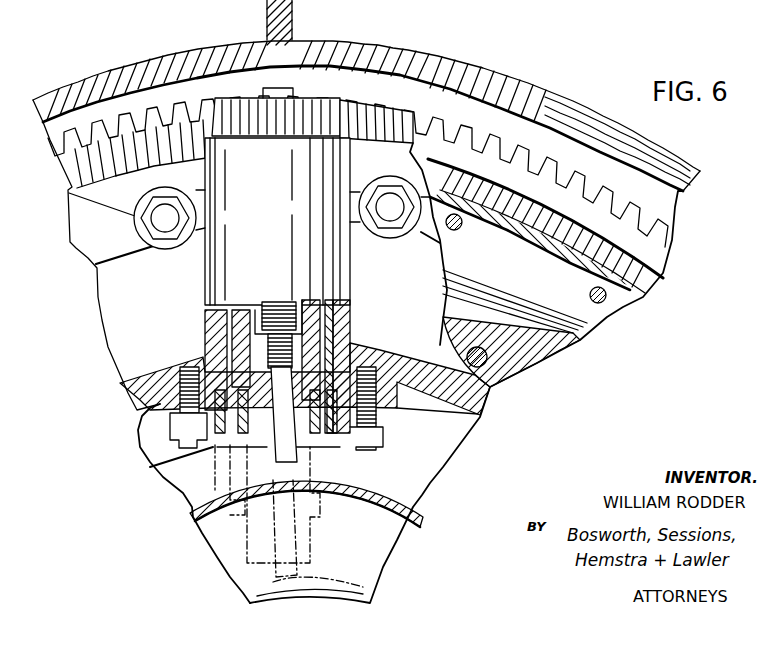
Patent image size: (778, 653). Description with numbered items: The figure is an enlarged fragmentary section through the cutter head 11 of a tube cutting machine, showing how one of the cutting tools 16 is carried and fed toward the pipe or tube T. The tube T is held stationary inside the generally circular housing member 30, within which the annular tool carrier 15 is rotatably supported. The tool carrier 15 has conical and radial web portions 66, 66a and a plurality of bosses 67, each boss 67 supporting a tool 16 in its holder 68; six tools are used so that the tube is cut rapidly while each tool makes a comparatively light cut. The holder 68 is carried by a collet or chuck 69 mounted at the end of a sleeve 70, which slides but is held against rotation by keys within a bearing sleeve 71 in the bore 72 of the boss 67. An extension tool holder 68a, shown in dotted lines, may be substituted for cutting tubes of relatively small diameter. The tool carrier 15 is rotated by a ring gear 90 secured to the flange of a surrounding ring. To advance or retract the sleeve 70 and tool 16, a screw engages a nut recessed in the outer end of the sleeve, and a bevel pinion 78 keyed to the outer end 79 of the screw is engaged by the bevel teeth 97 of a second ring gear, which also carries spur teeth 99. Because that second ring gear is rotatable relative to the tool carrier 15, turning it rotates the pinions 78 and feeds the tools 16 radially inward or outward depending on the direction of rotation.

The cutter head 11 is at (507, 71).
The tool carrier 15 is at (206, 328).
The cutting tool 16 is at (277, 448).
The housing member 30 is at (668, 162).
The conical and radial web portions 66 is at (148, 422).
The housing side wall 66a is at (101, 302).
The boss 67 is at (233, 258).
The tool holder 68 is at (303, 450).
The extension tool holder 68a is at (297, 536).
The collet or chuck 69 is at (377, 457).
The sleeve 70 is at (320, 355).
The bearing sleeve 71 is at (340, 316).
The bore 72 is at (345, 303).
The bevel pinion 78 is at (318, 110).
The outer end of screw 79 is at (298, 298).
The ring gear 90 is at (528, 146).
The bevel teeth 97 is at (399, 108).
The spur teeth 99 is at (386, 100).
The pipe or tube T is at (275, 581).